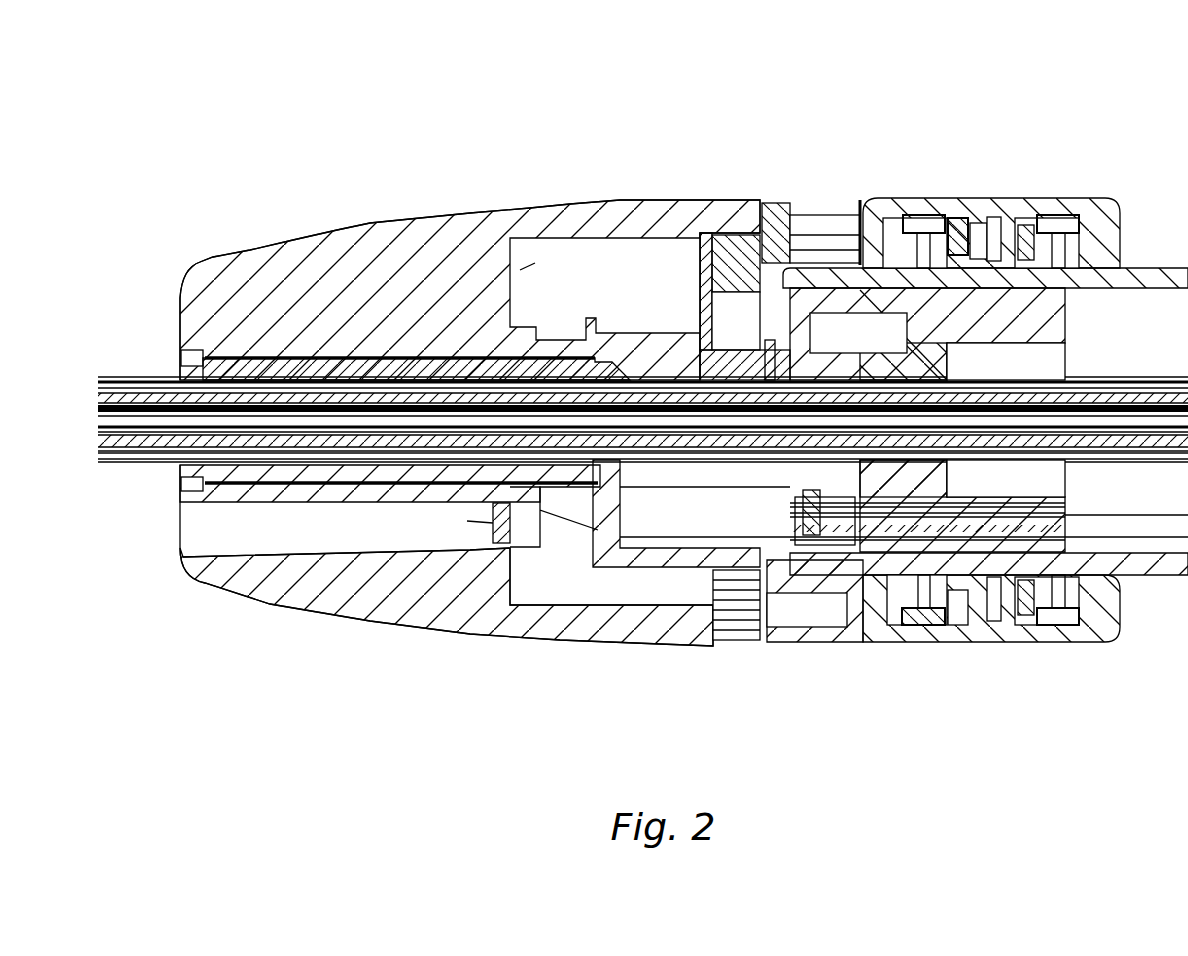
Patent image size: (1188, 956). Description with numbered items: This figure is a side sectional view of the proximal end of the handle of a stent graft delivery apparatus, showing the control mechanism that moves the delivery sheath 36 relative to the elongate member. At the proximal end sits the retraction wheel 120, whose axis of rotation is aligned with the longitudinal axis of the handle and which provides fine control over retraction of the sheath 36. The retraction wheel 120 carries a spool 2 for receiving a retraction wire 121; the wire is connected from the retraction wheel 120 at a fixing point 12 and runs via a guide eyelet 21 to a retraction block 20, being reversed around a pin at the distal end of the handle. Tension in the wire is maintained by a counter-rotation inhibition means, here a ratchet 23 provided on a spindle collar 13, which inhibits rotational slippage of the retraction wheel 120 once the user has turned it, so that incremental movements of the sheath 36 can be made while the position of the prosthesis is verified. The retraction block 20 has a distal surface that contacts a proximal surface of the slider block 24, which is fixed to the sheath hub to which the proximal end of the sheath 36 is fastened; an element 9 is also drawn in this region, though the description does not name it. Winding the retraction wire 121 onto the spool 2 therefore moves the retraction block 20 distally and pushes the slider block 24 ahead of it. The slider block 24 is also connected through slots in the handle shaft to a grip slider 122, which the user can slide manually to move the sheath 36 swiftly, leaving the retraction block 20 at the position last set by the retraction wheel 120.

The spool 2 is at (565, 334).
The electrical contact chamber 9 is at (997, 480).
The fixing point 12 is at (503, 528).
The spindle collar 13 is at (372, 465).
The retraction block 20 is at (852, 293).
The guide eyelet 21 is at (568, 542).
The ratchet 23 is at (730, 241).
The slider block 24 is at (1007, 323).
The sheath 36 is at (140, 468).
The retraction wheel 120 is at (209, 250).
The retraction wire 121 is at (1159, 533).
The grip slider 122 is at (1078, 195).